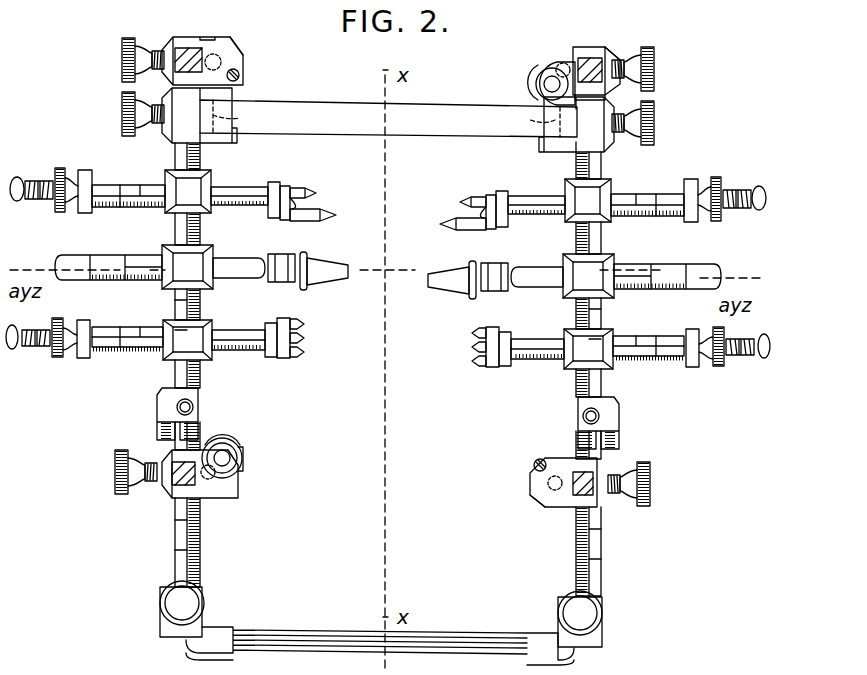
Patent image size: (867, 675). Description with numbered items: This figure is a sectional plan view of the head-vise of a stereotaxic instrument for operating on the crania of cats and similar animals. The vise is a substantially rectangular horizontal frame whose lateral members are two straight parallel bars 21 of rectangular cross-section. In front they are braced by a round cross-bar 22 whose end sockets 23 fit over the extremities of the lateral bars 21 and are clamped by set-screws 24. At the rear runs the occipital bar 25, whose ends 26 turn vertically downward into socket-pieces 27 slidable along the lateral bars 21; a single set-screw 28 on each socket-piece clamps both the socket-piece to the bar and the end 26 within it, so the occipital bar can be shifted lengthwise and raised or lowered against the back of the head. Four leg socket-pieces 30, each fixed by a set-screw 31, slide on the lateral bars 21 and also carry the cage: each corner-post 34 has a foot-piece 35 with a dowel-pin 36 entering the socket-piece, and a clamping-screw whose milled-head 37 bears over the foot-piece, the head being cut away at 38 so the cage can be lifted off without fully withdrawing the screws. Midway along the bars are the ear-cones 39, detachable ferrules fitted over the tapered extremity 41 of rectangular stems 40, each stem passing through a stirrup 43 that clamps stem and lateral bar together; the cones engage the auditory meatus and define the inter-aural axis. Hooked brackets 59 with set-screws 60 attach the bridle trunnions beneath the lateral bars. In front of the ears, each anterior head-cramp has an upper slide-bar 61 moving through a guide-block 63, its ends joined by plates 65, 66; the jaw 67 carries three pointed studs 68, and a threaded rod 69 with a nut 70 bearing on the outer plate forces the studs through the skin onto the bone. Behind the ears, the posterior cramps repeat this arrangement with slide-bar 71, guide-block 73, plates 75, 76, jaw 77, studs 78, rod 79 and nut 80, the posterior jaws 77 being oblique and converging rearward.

The lateral bar 21 is at (573, 574).
The front cross-bar 22 is at (298, 632).
The socket 23 is at (598, 645).
The set-screw 24 is at (590, 612).
The occipital bar 25 is at (327, 115).
The end of occipital bar 26 is at (535, 121).
The socket-piece 27 is at (600, 142).
The set-screw 28 is at (656, 131).
The socket-piece 30 is at (562, 506).
The set-screw 31 is at (651, 490).
The corner-post 34 is at (592, 494).
The foot-piece 35 is at (536, 490).
The dowel-pin 36 is at (546, 500).
The milled-head 37 is at (540, 62).
The cut-away portion of milled-head 38 is at (535, 70).
The ear-cone 39 is at (446, 292).
The stem 40 is at (500, 265).
The tapered inner extremity of stem 41 is at (478, 297).
The stirrup 43 is at (594, 270).
The hooked bracket 59 is at (613, 430).
The set-screw 60 is at (576, 415).
The upper slide-bar 61 is at (648, 341).
The guide-block 63 is at (568, 362).
The inner end-plate 65 is at (505, 370).
The outer end-plate 66 is at (688, 374).
The anterior jaw 67 is at (490, 369).
The pointed stud 68 is at (470, 361).
The threaded rod 69 is at (752, 370).
The nut 70 is at (712, 375).
The upper slide-bar 71 is at (652, 217).
The guide-block 73 is at (572, 188).
The inner end-plate 75 is at (502, 190).
The outer end-plate 76 is at (688, 180).
The posterior jaw 77 is at (489, 192).
The pointed stud 78 is at (452, 225).
The threaded rod 79 is at (750, 190).
The nut 80 is at (715, 178).